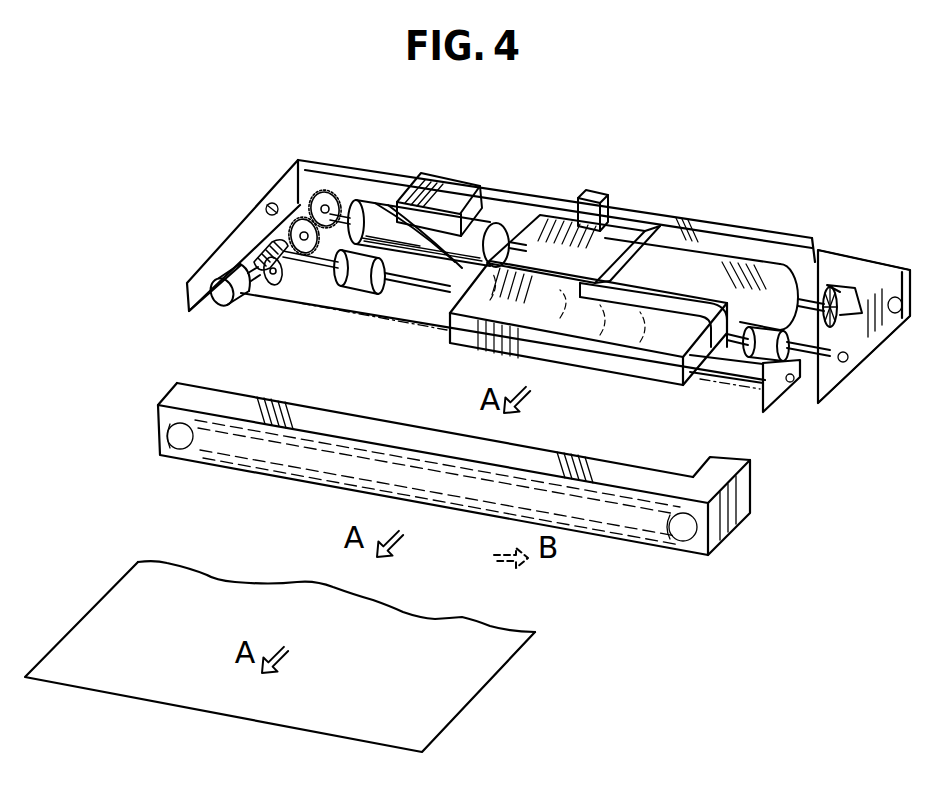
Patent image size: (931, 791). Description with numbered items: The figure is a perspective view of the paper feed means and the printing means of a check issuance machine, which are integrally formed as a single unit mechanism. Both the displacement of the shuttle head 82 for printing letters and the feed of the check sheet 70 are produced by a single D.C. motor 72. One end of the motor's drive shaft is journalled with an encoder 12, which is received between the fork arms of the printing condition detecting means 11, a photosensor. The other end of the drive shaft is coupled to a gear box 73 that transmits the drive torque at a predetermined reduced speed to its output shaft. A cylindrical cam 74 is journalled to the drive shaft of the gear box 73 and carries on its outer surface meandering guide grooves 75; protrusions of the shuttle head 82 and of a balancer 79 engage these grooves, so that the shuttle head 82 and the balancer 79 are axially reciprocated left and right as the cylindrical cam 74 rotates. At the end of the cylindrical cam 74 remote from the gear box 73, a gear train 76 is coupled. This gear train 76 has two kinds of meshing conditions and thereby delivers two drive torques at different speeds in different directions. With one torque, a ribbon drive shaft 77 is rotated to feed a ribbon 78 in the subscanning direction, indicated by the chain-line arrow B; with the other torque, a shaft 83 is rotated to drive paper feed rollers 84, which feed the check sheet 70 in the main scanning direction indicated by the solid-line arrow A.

The check sheet 70 is at (463, 693).
The printing condition detecting means 11 is at (848, 293).
The encoder 12 is at (837, 323).
The D.C. motor 72 is at (723, 263).
The gear box 73 is at (598, 228).
The cylindrical cam 74 is at (486, 233).
The meandering guide grooves 75 is at (383, 210).
The gear train 76 is at (318, 138).
The ribbon drive shaft 77 is at (224, 300).
The ribbon 78 is at (733, 513).
The balancer 79 is at (448, 185).
The shuttle head 82 is at (658, 375).
The shaft 83 is at (420, 283).
The paper feed rollers 84 is at (352, 280).